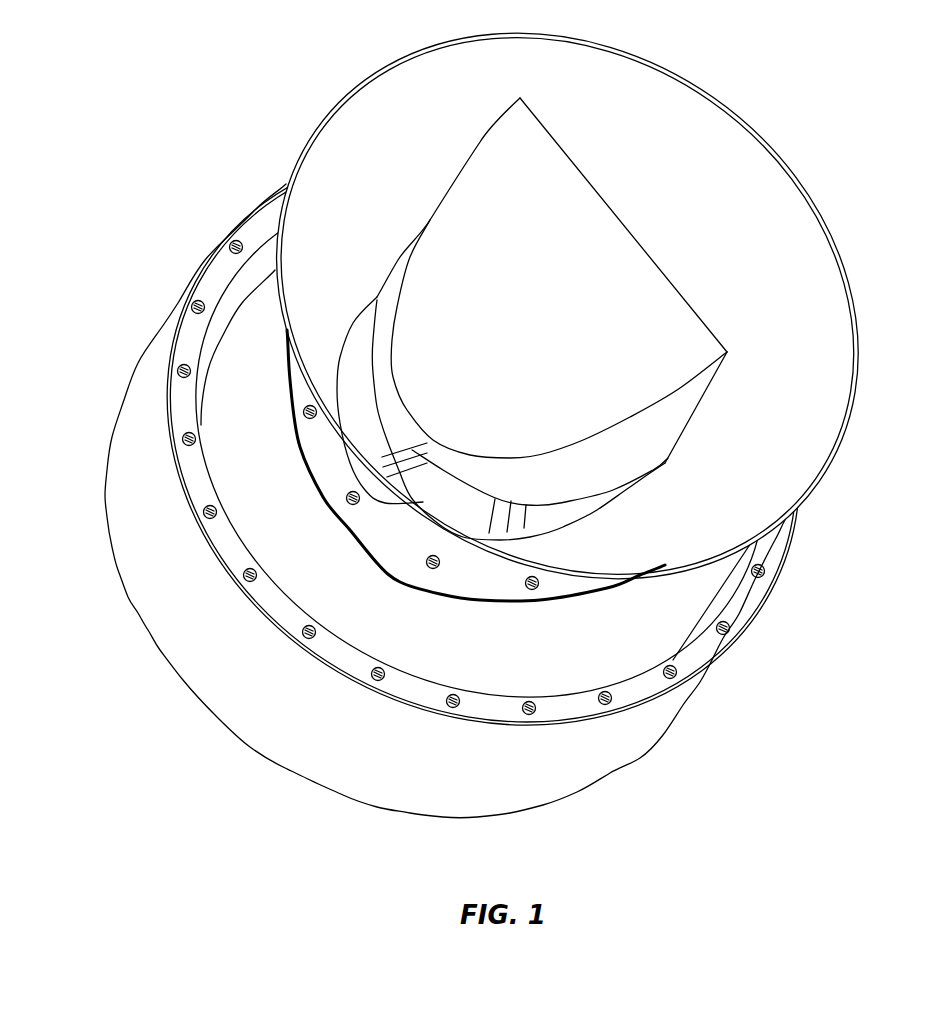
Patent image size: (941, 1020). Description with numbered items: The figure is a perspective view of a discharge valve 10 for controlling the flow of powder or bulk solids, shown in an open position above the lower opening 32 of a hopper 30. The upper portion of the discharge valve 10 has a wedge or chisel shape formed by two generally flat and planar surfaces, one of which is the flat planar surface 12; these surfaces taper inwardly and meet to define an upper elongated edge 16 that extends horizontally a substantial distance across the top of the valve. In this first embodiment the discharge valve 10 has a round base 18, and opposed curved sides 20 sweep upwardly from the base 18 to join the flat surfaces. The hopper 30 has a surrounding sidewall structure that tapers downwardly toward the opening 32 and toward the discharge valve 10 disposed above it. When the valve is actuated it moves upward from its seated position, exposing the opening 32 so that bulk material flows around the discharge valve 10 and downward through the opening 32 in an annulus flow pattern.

The discharge valve 10 is at (752, 250).
The flat planar surface 12 is at (538, 274).
The upper elongated edge 16 is at (620, 220).
The round base 18 is at (397, 400).
The curved sides 20 is at (660, 417).
The hopper 30 is at (693, 540).
The lower opening 32 is at (453, 502).